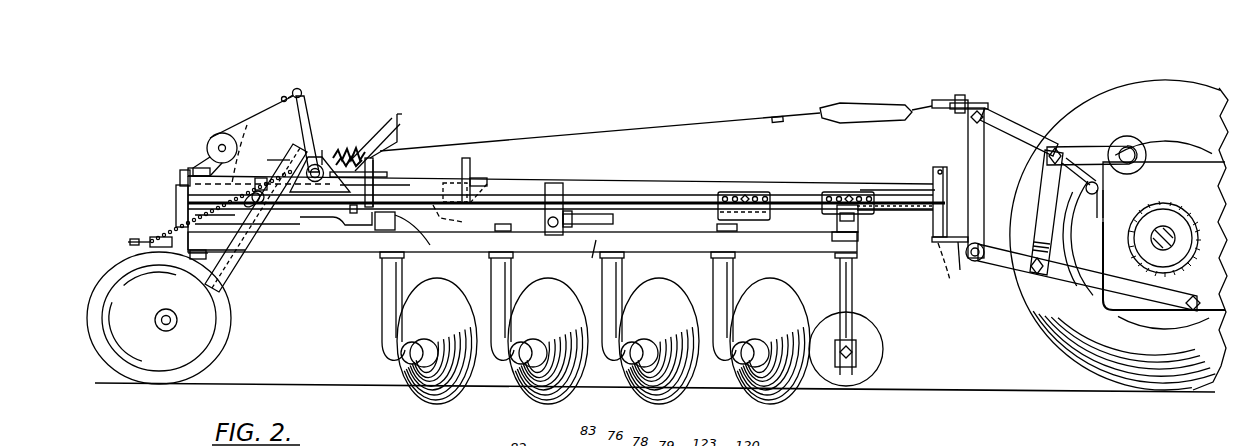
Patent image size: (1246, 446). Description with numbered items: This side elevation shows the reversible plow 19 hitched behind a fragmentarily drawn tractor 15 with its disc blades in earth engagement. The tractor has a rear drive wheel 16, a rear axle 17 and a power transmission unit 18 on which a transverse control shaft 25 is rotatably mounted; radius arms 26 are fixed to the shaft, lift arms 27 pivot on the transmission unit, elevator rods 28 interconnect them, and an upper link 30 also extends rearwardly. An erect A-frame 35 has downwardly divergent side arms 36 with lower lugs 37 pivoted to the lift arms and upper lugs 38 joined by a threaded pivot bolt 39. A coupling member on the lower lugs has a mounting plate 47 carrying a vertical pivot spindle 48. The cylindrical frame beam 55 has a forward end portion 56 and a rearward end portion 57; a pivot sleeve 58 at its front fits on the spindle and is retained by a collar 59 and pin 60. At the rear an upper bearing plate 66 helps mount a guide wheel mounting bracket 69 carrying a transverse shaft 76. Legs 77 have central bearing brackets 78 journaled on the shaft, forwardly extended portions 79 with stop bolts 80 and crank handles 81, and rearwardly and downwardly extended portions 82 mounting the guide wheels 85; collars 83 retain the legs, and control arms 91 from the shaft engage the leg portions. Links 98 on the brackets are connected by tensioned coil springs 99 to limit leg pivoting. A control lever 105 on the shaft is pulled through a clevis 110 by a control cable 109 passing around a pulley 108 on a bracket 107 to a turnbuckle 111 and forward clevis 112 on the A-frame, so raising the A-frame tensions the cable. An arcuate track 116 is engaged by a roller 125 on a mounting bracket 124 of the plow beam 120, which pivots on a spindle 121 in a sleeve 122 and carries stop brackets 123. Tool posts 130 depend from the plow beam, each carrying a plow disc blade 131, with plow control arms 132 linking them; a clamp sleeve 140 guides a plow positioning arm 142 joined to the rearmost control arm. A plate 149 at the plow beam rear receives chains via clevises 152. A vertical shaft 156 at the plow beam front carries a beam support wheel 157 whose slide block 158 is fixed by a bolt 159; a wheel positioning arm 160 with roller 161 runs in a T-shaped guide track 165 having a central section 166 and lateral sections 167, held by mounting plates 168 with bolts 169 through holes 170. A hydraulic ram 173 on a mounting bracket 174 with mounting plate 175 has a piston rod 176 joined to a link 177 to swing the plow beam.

The tractor 15 is at (1216, 69).
The rear drive wheels 16 is at (1150, 100).
The rear axle 17 is at (1168, 232).
The power transmission unit 18 is at (1172, 165).
The reversible plow 19 is at (379, 98).
The control shaft 25 is at (1133, 150).
The radius arms 26 is at (1086, 147).
The lift arms 27 is at (1072, 298).
The elevator rods 28 is at (1040, 194).
The upper link 30 is at (1010, 125).
The A-frame 35 is at (998, 216).
The side arms 36 is at (984, 160).
The lower lugs 37 is at (974, 262).
The upper lugs 38 is at (970, 118).
The threaded pivot bolt 39 is at (985, 112).
The mounting plate 47 is at (955, 261).
The pivot spindle 48 is at (936, 264).
The frame beam 55 is at (645, 186).
The forward end portion 56 is at (932, 185).
The rearward end portion 57 is at (190, 172).
The pivot sleeve 58 is at (940, 243).
The collar 59 is at (938, 168).
The pin 60 is at (941, 168).
The upper bearing plate 66 is at (362, 150).
The guide wheel mounting bracket 69 is at (380, 165).
The shaft 76 is at (316, 183).
The legs 77 is at (352, 156).
The central bearing brackets 78 is at (336, 150).
The forwardly extended portions 79 is at (390, 186).
The stop bolts 80 is at (387, 177).
The crank handles 81 is at (400, 126).
The rearwardly and downwardly extended portions 82 is at (240, 262).
The collars 83 is at (304, 192).
The guide wheels 85 is at (108, 350).
The control arms 91 is at (262, 204).
The links 98 is at (320, 150).
The tensioned coil springs 99 is at (378, 155).
The control lever 105 is at (306, 118).
The bracket 107 is at (200, 168).
The pulley 108 is at (214, 140).
The control cable 109 is at (688, 125).
The clevis 110 is at (292, 90).
The turnbuckle 111 is at (872, 104).
The forward clevis 112 is at (950, 98).
The arcuate track 116 is at (592, 258).
The plow beam 120 is at (662, 258).
The spindle 121 is at (198, 260).
The sleeve 122 is at (178, 213).
The stop brackets 123 is at (422, 234).
The mounting bracket 124 is at (614, 220).
The roller 125 is at (558, 190).
The tool posts 130 is at (492, 278).
The plow disc blade 131 is at (440, 402).
The plow control arms 132 is at (511, 227).
The clamp sleeve 140 is at (262, 177).
The plow positioning arm 142 is at (322, 196).
The plate 149 is at (150, 241).
The clevises 152 is at (150, 238).
The shaft 156 is at (856, 291).
The beam support wheel 157 is at (882, 358).
The slide block 158 is at (860, 352).
The bolt 159 is at (855, 360).
The wheel positioning arm 160 is at (858, 232).
The roller 161 is at (858, 222).
The guide track 165 is at (840, 228).
The central section 166 is at (792, 218).
The lateral sections 167 is at (882, 208).
The mounting plates 168 is at (720, 198).
The bolts 169 is at (745, 194).
The holes 170 is at (756, 195).
The hydraulic ram 173 is at (461, 206).
The mounting bracket 174 is at (490, 180).
The mounting plate 175 is at (466, 160).
The piston rod 176 is at (251, 139).
The link 177 is at (190, 199).